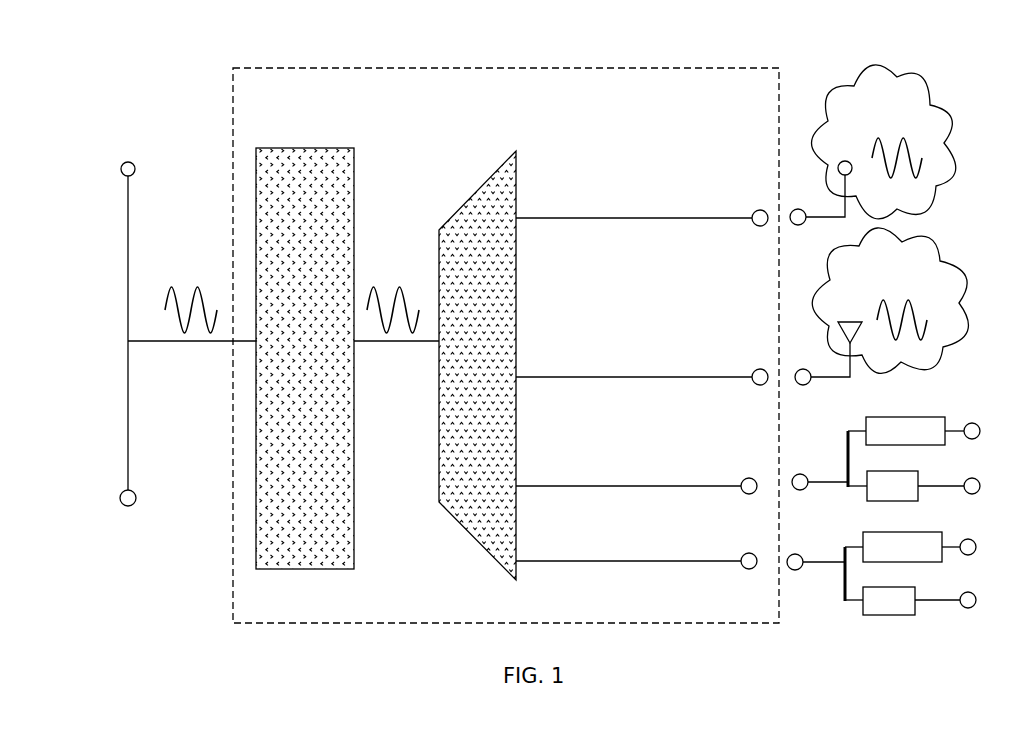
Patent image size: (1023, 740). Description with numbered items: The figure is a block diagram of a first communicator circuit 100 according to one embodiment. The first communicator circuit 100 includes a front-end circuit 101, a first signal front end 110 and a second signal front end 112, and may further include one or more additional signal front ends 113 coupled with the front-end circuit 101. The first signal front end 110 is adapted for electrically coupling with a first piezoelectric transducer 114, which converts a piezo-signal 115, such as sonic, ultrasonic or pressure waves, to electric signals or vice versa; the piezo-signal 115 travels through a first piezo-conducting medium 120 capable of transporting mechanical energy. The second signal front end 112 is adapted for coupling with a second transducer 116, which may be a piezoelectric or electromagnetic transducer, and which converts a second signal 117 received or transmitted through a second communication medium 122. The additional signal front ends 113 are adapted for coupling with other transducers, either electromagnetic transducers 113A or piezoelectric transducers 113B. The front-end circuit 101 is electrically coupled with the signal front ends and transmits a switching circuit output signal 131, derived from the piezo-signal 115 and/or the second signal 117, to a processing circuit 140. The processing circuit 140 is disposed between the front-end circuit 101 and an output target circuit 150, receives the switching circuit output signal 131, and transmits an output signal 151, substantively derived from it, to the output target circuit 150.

The first communicator circuit 100 is at (506, 331).
The front-end circuit 101 is at (483, 187).
The first signal front end 110 is at (755, 210).
The second signal front end 112 is at (755, 370).
The signal front ends 113 is at (747, 477).
The electromagnetic transducers 113A is at (913, 415).
The piezoelectric transducers 113B is at (943, 535).
The first piezoelectric transducer 114 is at (847, 163).
The piezo-signal 115 is at (913, 143).
The second transducer 116 is at (850, 320).
The second signal 117 is at (913, 307).
The first piezo-conducting medium 120 is at (867, 90).
The second communication medium 122 is at (837, 280).
The switching circuit output signal 131 is at (383, 280).
The processing circuit 140 is at (290, 148).
The output target circuit 150 is at (128, 215).
The output signal 151 is at (190, 278).